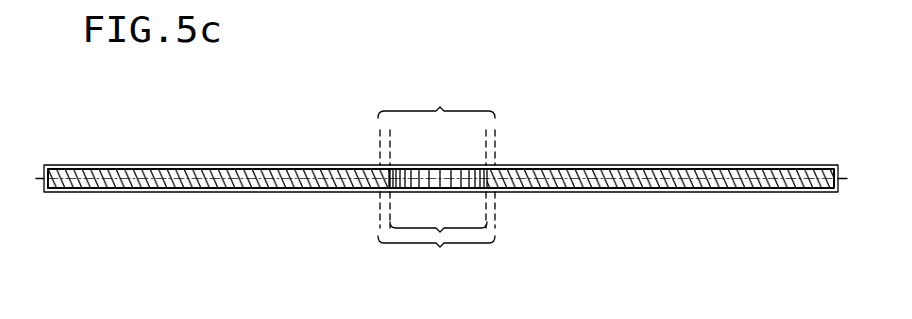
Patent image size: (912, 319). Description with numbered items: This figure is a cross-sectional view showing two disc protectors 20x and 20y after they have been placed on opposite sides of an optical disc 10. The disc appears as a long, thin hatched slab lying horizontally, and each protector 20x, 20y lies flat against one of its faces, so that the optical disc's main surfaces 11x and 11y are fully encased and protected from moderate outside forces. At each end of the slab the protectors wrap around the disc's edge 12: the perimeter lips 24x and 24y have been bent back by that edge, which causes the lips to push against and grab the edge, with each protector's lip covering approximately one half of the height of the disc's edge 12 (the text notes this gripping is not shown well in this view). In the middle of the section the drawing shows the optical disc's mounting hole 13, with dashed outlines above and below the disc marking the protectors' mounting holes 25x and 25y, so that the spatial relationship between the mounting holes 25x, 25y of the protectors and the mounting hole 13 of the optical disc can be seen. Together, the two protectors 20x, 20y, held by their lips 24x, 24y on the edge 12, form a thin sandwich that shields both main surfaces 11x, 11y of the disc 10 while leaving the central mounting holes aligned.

The optical disc 10 is at (608, 178).
The main surface of the optical disc 11x is at (742, 170).
The main surface of the optical disc 11y is at (697, 183).
The disc edge 12 is at (49, 189).
The optical disc mounting hole 13 is at (408, 227).
The protector 20x is at (263, 166).
The protector 20y is at (278, 194).
The perimeter lip 24x is at (44, 165).
The perimeter lip 24y is at (44, 193).
The protector mounting hole 25x is at (440, 108).
The protector mounting hole 25y is at (440, 244).